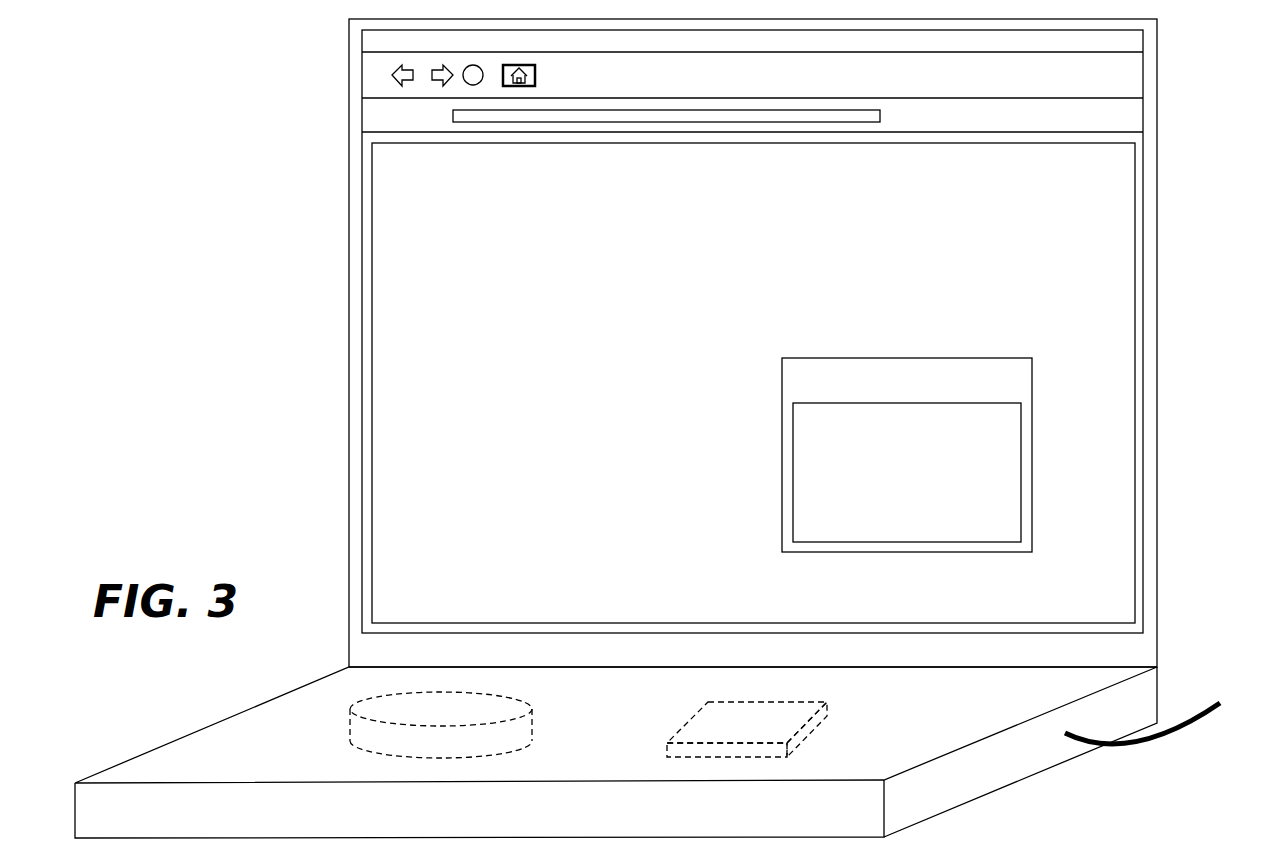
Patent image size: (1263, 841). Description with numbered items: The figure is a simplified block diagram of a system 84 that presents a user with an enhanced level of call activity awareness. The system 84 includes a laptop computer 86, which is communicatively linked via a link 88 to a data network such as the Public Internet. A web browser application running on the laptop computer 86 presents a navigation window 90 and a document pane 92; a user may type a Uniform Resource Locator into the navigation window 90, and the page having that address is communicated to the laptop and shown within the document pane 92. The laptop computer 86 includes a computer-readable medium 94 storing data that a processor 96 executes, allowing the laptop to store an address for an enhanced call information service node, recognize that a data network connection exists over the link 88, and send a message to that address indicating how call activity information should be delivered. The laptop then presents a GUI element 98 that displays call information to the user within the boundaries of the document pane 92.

The system 84 is at (342, 90).
The laptop computer 86 is at (237, 377).
The link 88 is at (1215, 727).
The navigation window 90 is at (1162, 30).
The document pane 92 is at (1162, 137).
The computer-readable medium 94 is at (419, 723).
The processor 96 is at (726, 733).
The GUI element 98 is at (828, 391).